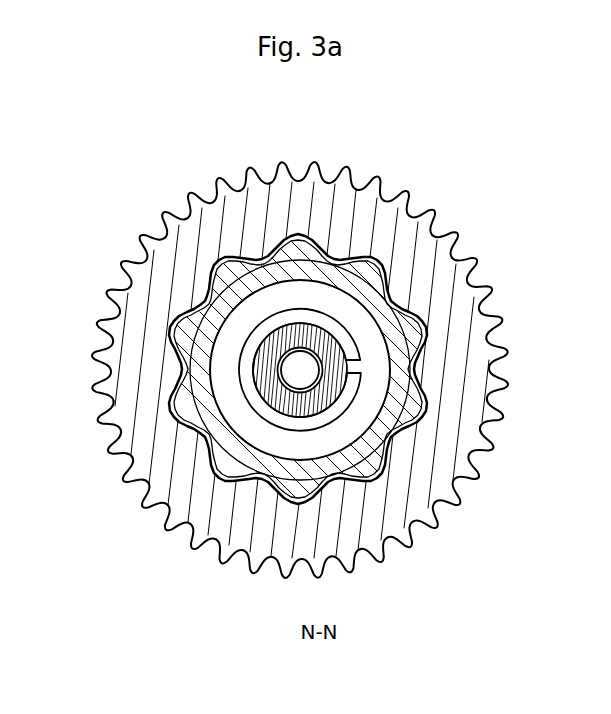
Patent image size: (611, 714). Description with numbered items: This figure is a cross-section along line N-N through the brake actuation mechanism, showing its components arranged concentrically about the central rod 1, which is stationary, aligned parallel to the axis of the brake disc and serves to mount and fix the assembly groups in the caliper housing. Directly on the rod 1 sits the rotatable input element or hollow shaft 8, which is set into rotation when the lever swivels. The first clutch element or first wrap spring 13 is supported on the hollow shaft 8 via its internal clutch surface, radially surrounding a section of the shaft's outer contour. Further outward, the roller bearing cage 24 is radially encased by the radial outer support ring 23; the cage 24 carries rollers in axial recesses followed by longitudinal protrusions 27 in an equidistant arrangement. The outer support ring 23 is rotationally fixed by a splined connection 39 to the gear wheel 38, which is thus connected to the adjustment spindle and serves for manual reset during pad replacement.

The rod 1 is at (293, 361).
The rotatable input element/hollow shaft 8 is at (276, 390).
The first clutch element/first wrap spring 13 is at (303, 424).
The radial outer support ring 23 is at (410, 330).
The roller bearing cage 24 is at (392, 400).
The protrusions 27 is at (232, 283).
The gear wheel 38 is at (397, 238).
The splined connection 39 is at (387, 278).